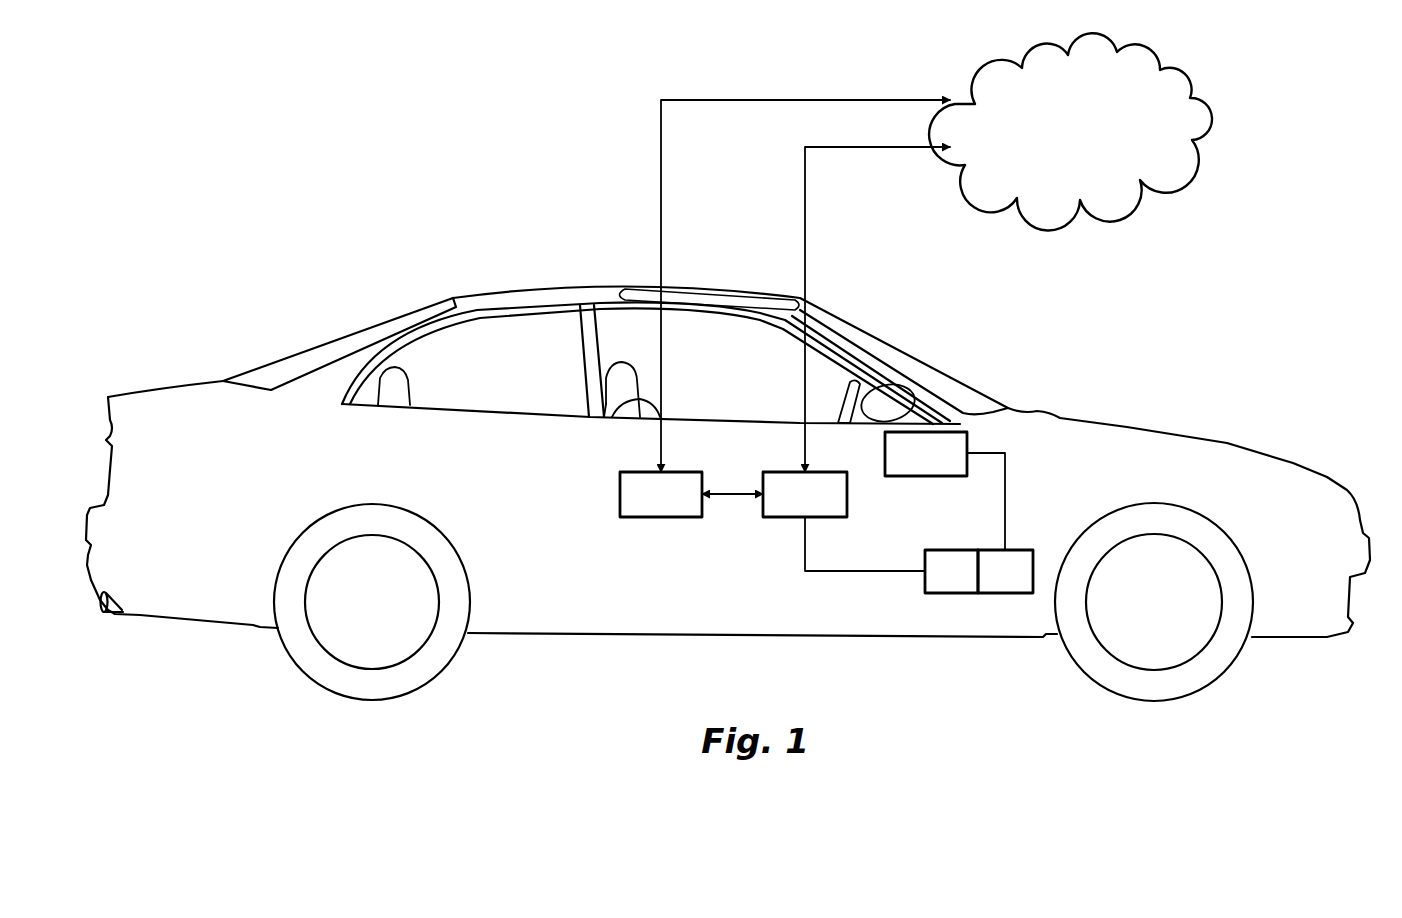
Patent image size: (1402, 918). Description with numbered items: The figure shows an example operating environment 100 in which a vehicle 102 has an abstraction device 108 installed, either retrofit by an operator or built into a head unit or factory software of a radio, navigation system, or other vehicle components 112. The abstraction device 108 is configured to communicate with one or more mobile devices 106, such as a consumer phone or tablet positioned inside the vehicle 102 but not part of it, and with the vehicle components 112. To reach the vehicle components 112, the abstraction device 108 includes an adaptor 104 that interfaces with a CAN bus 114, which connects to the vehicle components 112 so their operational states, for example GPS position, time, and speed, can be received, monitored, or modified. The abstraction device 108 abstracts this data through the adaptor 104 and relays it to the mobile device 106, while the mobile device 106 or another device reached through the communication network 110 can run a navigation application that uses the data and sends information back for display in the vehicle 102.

The operating environment 100 is at (350, 165).
The vehicle 102 is at (557, 286).
The adaptor 104 is at (968, 584).
The mobile device 106 is at (644, 506).
The abstraction device 108 is at (788, 506).
The communication network 110 is at (1052, 134).
The vehicle components 112 is at (926, 454).
The CAN bus 114 is at (1022, 584).